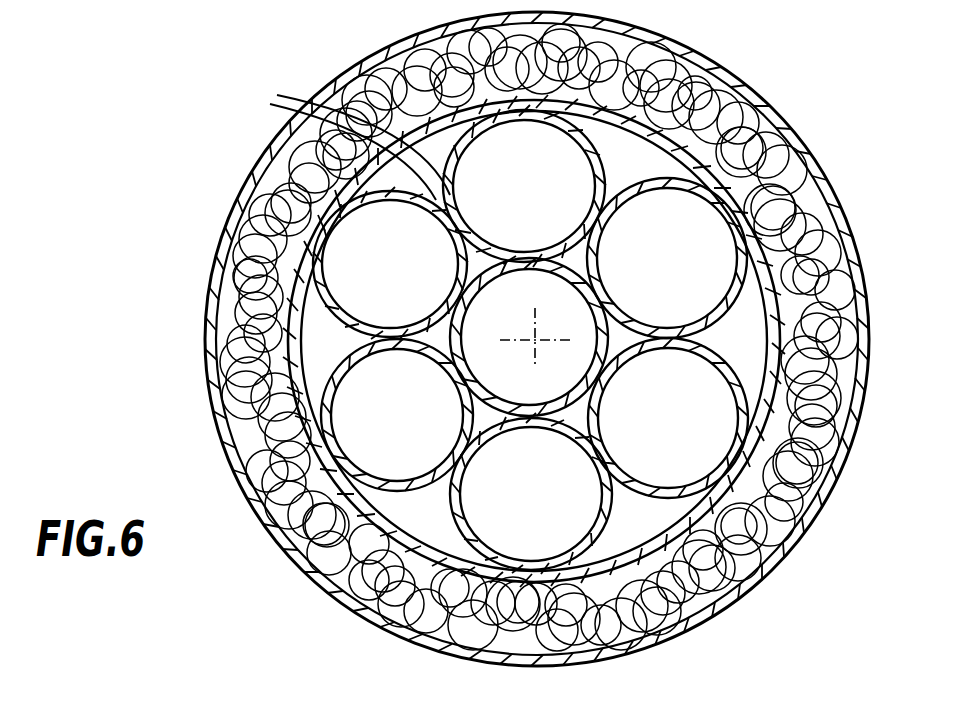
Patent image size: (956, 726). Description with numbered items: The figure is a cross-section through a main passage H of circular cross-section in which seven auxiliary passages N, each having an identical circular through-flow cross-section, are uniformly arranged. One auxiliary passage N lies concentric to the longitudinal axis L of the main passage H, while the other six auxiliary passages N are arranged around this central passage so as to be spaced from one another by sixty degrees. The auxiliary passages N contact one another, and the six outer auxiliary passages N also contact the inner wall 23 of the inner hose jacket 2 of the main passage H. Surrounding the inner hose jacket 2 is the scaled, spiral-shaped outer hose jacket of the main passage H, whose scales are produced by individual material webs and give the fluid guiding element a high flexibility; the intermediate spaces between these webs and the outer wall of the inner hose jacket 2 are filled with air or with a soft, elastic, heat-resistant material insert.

The auxiliary passage N is at (344, 141).
The main passage H is at (228, 177).
The inner wall 23 is at (307, 317).
The inner hose jacket 2 is at (293, 407).
The longitudinal axis L is at (533, 340).